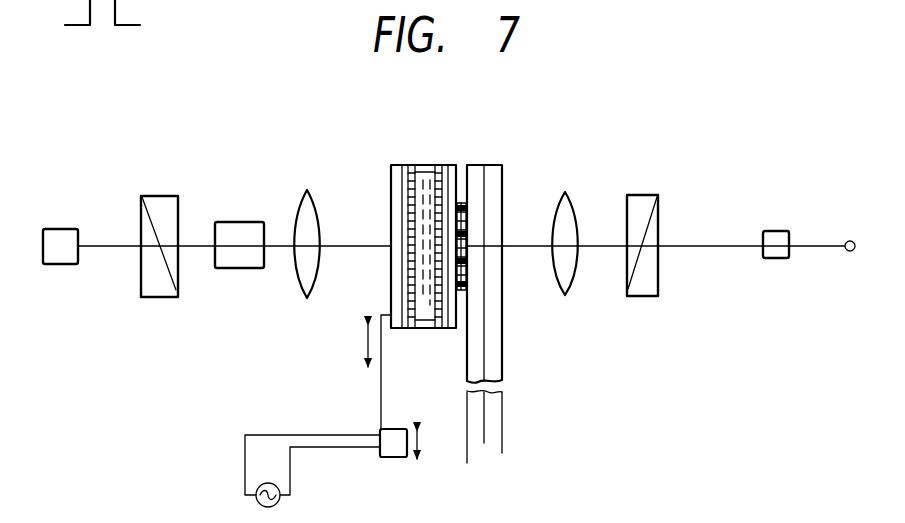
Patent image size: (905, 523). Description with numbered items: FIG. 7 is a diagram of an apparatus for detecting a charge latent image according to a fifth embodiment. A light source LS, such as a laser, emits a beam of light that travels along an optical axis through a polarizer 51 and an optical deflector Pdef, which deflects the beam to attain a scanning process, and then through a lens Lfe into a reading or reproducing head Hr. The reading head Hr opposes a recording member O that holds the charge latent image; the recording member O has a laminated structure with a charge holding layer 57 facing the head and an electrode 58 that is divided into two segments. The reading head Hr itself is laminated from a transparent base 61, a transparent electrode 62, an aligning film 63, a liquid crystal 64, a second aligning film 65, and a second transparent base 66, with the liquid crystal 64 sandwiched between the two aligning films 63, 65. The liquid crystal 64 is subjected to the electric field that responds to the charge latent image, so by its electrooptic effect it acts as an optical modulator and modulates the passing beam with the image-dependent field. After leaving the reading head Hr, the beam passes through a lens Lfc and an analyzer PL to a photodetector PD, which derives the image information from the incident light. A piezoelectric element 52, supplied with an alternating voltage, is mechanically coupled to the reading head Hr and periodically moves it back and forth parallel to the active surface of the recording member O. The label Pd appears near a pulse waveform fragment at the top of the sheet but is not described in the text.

The polarizer 51 is at (166, 196).
The piezoelectric element 52 is at (380, 450).
The charge holding layer 57 is at (474, 445).
The electrode 58 is at (492, 445).
The transparent base 61 is at (395, 165).
The transparent electrode 62 is at (406, 165).
The aligning film 63 is at (416, 165).
The liquid crystal 64 is at (426, 165).
The aligning film 65 is at (439, 165).
The transparent base 66 is at (448, 165).
The light source LS is at (70, 229).
The optical deflector Pdef is at (252, 228).
The lens Lfe is at (318, 197).
The reading head Hr is at (452, 202).
The recording member O is at (510, 333).
The lens Lfc is at (572, 197).
The analyzer PL is at (655, 196).
The photodetector PD is at (781, 231).
The detection signal Pd is at (80, 29).